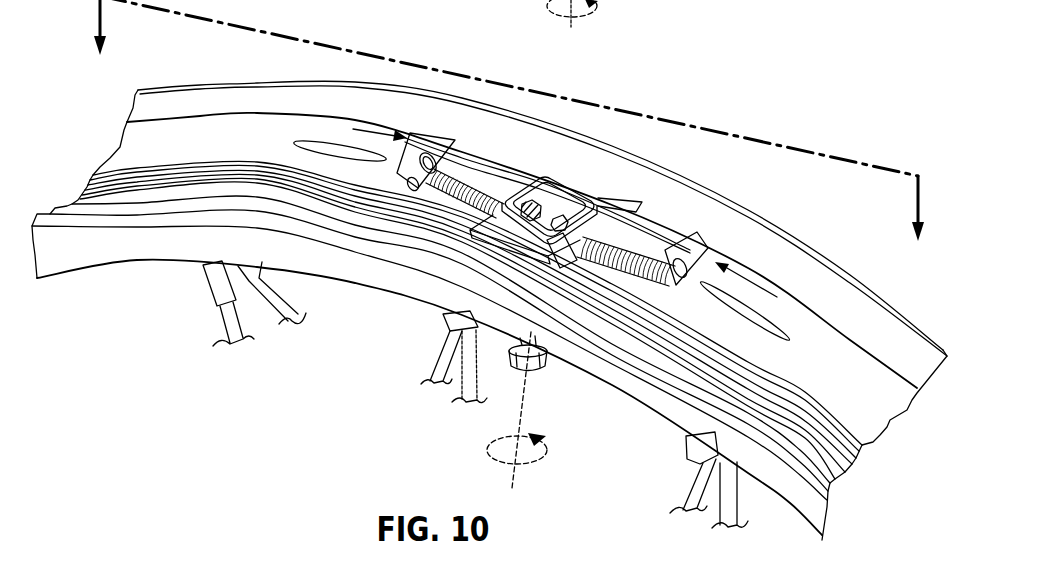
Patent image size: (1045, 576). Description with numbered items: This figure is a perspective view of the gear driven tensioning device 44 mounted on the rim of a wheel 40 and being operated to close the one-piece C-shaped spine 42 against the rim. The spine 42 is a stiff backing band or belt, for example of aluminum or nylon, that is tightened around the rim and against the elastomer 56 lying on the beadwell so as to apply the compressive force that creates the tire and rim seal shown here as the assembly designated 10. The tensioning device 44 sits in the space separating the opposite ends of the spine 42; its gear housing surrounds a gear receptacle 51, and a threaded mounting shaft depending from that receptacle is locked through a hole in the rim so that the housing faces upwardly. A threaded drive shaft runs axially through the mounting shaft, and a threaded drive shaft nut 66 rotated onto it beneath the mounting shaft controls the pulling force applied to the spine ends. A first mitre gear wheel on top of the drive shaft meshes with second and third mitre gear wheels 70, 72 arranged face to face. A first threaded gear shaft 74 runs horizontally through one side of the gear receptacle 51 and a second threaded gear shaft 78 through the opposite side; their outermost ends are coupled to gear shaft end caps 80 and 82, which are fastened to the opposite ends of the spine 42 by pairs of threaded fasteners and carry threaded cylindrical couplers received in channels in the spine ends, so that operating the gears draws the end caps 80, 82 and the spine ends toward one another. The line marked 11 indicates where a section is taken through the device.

The rail system 10 is at (293, 100).
The section line 11- 11 is at (502, 138).
The wheel 40 is at (489, 287).
The C-shaped spine 42 is at (197, 133).
The tensioning device 44 is at (542, 201).
The gear receptacle 51 is at (515, 230).
The elastomer 56 is at (482, 180).
The drive shaft nut 66 is at (537, 373).
The second mitre gear wheel 70 is at (567, 217).
The third mitre gear wheel 72 is at (527, 200).
The first threaded gear shaft 74 is at (606, 262).
The second threaded gear shaft 78 is at (450, 193).
The gear shaft end cap 80 is at (673, 277).
The gear shaft end cap 82 is at (413, 153).